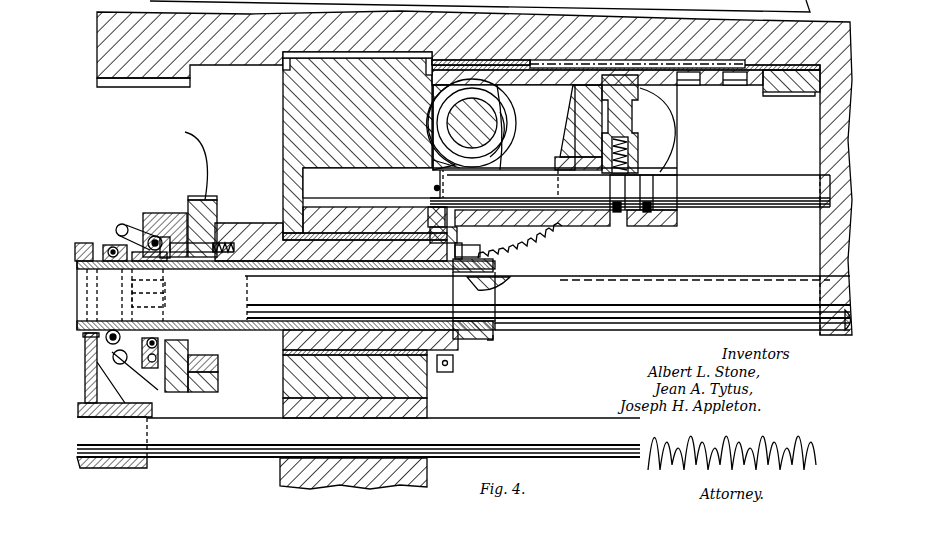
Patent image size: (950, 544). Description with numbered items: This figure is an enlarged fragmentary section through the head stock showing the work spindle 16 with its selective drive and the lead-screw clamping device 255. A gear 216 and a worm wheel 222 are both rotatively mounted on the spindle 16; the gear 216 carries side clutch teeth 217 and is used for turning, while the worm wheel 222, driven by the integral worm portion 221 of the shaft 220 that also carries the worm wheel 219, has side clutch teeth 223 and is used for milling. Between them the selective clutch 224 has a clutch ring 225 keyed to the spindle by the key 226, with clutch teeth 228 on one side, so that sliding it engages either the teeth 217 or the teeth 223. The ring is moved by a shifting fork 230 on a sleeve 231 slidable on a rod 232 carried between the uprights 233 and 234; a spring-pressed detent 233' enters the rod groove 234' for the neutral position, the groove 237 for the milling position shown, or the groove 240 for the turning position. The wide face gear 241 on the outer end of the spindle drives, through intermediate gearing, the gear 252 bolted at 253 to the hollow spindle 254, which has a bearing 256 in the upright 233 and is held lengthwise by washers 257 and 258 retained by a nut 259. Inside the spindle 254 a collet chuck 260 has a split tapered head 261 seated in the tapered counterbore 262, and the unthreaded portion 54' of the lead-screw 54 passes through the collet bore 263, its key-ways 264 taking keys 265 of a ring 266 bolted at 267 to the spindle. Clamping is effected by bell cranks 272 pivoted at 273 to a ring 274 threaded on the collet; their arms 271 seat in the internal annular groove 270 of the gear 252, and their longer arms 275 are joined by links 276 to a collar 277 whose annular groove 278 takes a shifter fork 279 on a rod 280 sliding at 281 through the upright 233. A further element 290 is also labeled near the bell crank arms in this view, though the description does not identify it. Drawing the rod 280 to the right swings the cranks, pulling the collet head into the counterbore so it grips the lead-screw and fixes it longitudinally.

The work spindle 16 is at (110, 26).
The wide face gear 241 is at (134, 87).
The selective clutch 224 is at (658, 90).
The key 226 is at (673, 72).
The clutch ring 225 is at (668, 84).
The side clutch teeth 217 is at (722, 78).
The clutch teeth 228 is at (717, 84).
The gear 216 is at (778, 96).
The hollow spindle 254 is at (283, 215).
The bearing 256 is at (286, 190).
The washer 257 is at (292, 225).
The split and tapered head 261 is at (423, 268).
The shaft 220 is at (480, 123).
The worm wheel 222 is at (480, 88).
The worm portion 221 is at (500, 138).
The side clutch teeth 223 is at (558, 120).
The shifting fork 230 is at (632, 93).
The spring-pressed detent 233' is at (681, 130).
The rod 232 is at (782, 210).
The rod groove 234' is at (665, 192).
The rod groove 237 is at (615, 214).
The rod groove 240 is at (647, 215).
The sleeve 231 is at (597, 226).
The washer 258 is at (445, 205).
The nut 259 is at (448, 225).
The bolt 267 is at (463, 245).
The worm wheel 219 is at (540, 247).
The bolt 253 is at (258, 235).
The bore 263 is at (237, 320).
The lead-screw 54 is at (548, 289).
The unthreaded portion 54' is at (672, 288).
The upright 234 is at (800, 298).
The key-ways 264 is at (495, 282).
The keys 265 is at (480, 326).
The ring 266 is at (487, 342).
The tapered counterbore 262 is at (428, 380).
The upright 233 is at (376, 367).
The collet chuck 260 is at (290, 370).
The rod 280 is at (553, 418).
The sliding support 281 is at (278, 472).
The annular groove 278 is at (88, 244).
The bell cranks 272 is at (127, 210).
The lead-screw clamping device 255 is at (142, 198).
The longer arms 275 is at (135, 222).
The links 276 is at (95, 247).
The internal annular groove 270 is at (178, 225).
The arms 271 is at (165, 240).
The pivot 273 is at (190, 215).
The gear 252 is at (195, 200).
The spring 290 is at (179, 162).
The ring 274 is at (155, 257).
The collar 277 is at (106, 341).
The shifter fork 279 is at (90, 392).